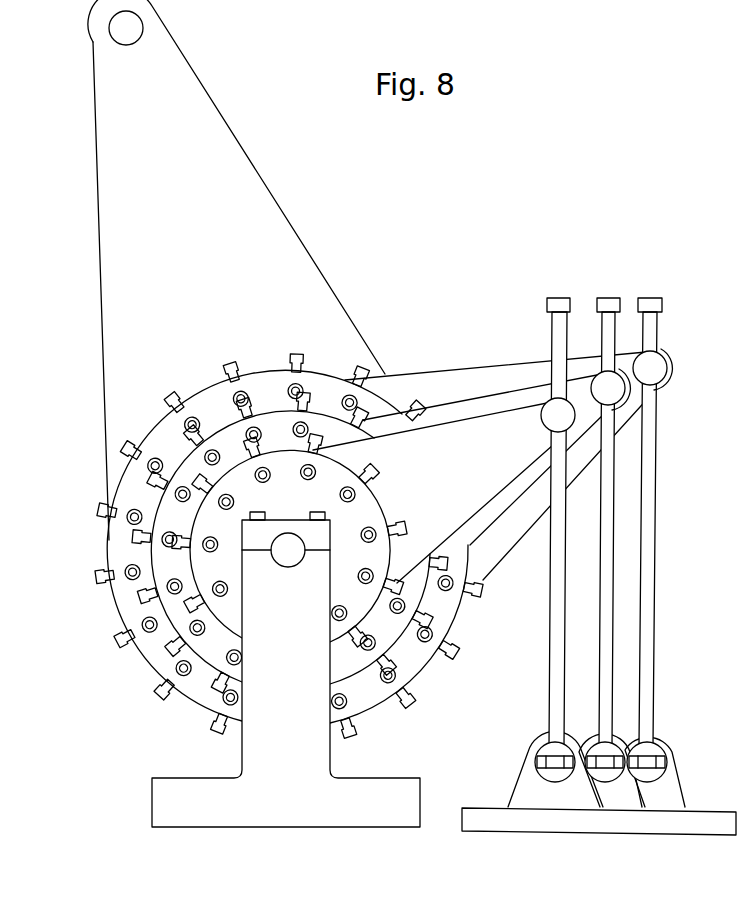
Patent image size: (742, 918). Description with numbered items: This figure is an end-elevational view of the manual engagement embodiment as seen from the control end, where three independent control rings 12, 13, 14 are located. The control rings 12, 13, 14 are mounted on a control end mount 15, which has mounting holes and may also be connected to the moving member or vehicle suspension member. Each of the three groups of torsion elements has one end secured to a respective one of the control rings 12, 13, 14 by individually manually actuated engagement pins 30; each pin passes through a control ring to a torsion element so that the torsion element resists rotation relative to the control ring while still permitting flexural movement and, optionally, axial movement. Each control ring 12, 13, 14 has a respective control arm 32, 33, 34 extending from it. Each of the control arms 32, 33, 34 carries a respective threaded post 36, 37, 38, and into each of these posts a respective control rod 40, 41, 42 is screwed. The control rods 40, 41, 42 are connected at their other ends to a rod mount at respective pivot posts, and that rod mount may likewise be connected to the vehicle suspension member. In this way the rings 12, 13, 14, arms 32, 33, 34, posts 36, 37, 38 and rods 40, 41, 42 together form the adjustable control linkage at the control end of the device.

The control ring 12 is at (259, 507).
The control ring 13 is at (195, 465).
The control ring 14 is at (265, 385).
The control end mount 15 is at (165, 797).
The engagement pins 30 is at (173, 553).
The control arm 32 is at (430, 440).
The control arm 33 is at (460, 412).
The control arm 34 is at (498, 376).
The threaded post 36 is at (553, 416).
The threaded post 37 is at (613, 392).
The threaded post 38 is at (653, 368).
The control rod 40 is at (555, 673).
The control rod 41 is at (600, 682).
The control rod 42 is at (647, 638).